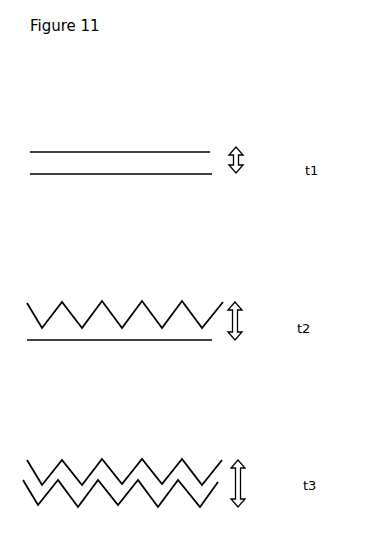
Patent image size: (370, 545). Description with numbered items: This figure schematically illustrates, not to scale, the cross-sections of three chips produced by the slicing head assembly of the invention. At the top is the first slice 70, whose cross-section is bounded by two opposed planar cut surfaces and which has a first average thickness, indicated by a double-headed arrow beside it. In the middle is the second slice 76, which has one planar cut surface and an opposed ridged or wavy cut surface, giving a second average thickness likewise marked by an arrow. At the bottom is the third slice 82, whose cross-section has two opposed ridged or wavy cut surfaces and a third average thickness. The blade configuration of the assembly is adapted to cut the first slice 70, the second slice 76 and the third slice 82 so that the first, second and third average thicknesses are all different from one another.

The first slice 70 is at (85, 158).
The second slice 76 is at (60, 300).
The third slice 82 is at (60, 460).